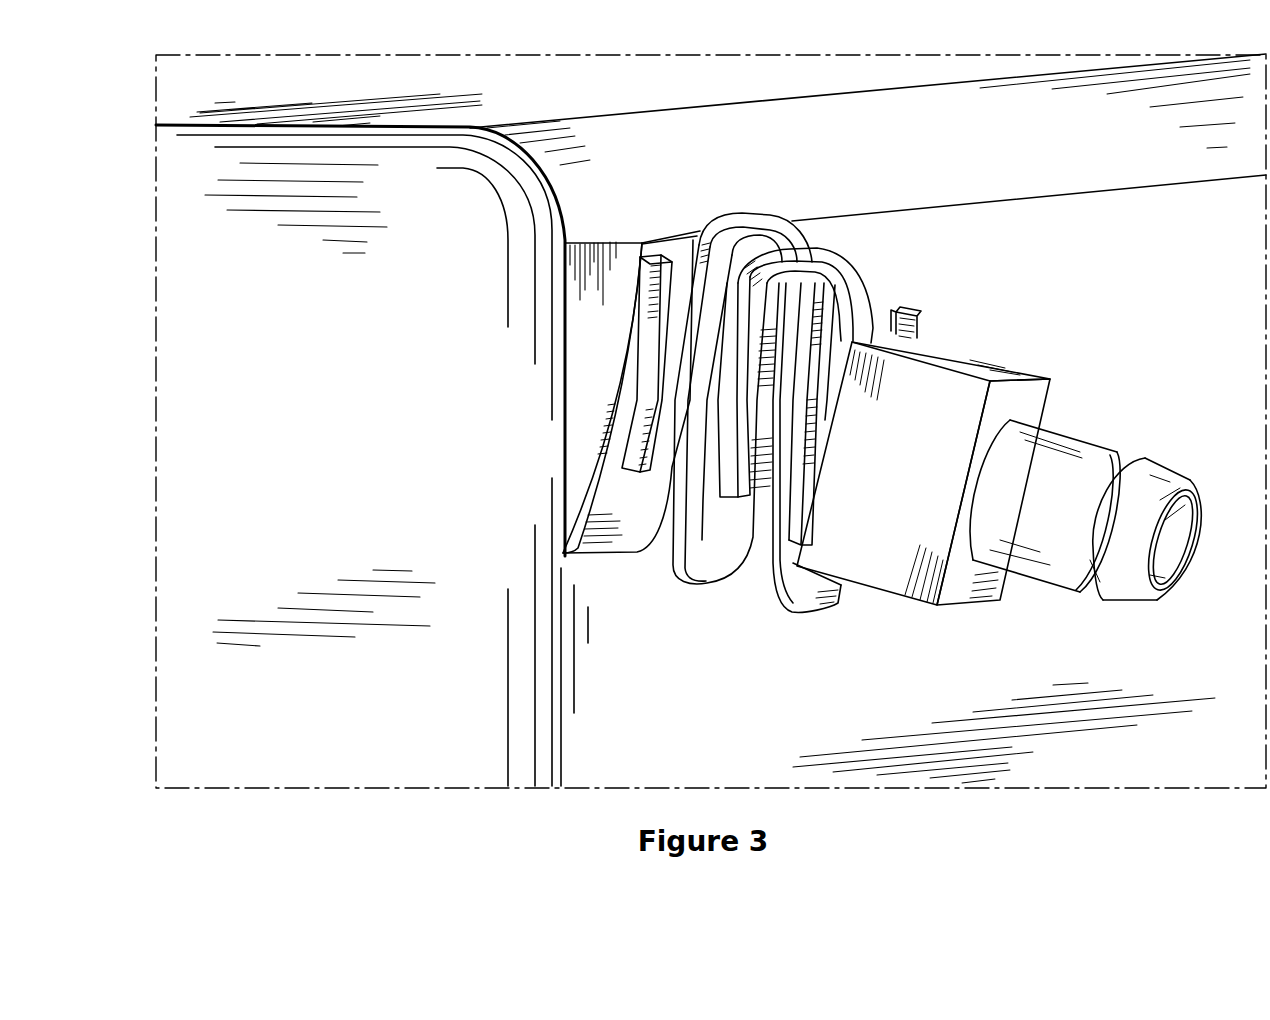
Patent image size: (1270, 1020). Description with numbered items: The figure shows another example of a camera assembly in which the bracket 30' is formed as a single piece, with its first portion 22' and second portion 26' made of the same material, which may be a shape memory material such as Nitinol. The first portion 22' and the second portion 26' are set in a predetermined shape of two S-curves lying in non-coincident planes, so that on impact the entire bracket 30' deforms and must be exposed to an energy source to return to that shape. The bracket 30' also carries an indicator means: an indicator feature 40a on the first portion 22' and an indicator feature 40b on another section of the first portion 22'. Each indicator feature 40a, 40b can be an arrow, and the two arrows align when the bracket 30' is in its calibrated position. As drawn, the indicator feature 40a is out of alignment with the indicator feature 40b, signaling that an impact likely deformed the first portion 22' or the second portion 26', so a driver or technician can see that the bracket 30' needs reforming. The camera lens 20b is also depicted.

The bracket 30' is at (733, 354).
The second portion 26' is at (724, 450).
The first portion 22' is at (828, 420).
The indicator feature 40a is at (712, 427).
The indicator feature 40b is at (780, 407).
The camera lens 20b is at (1065, 433).